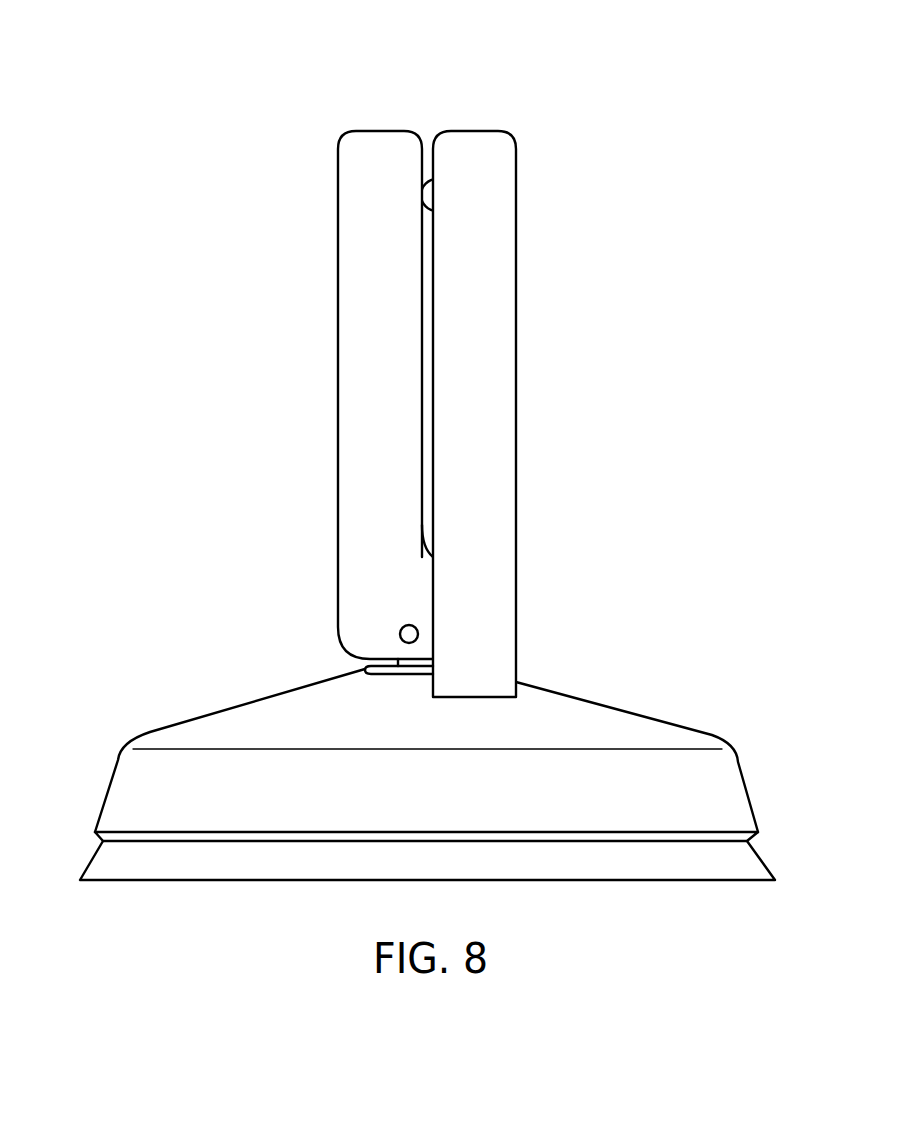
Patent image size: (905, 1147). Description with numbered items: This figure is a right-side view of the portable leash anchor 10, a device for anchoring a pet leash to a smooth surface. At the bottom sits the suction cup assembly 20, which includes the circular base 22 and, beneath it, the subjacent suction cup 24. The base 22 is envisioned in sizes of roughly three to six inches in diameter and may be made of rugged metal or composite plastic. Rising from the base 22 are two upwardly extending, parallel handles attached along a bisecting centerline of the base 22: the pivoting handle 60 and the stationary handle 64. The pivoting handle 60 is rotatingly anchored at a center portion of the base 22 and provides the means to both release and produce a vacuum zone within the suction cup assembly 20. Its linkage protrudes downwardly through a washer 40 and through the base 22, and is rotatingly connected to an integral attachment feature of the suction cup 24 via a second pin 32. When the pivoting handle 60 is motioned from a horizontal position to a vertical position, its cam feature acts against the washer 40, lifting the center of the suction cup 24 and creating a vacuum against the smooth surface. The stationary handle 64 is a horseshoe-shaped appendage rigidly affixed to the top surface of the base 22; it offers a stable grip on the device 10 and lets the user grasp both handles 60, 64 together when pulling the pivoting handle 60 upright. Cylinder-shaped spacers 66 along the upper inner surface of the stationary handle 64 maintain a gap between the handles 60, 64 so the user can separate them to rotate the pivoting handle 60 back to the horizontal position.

The portable leash anchor 10 is at (99, 54).
The suction cup assembly 20 is at (752, 775).
The circular base 22 is at (755, 812).
The suction cup 24 is at (757, 859).
The second pin 32 is at (400, 633).
The washer 40 is at (364, 667).
The pivoting handle 60 is at (379, 146).
The stationary handle 64 is at (475, 146).
The spacers 66 is at (426, 195).